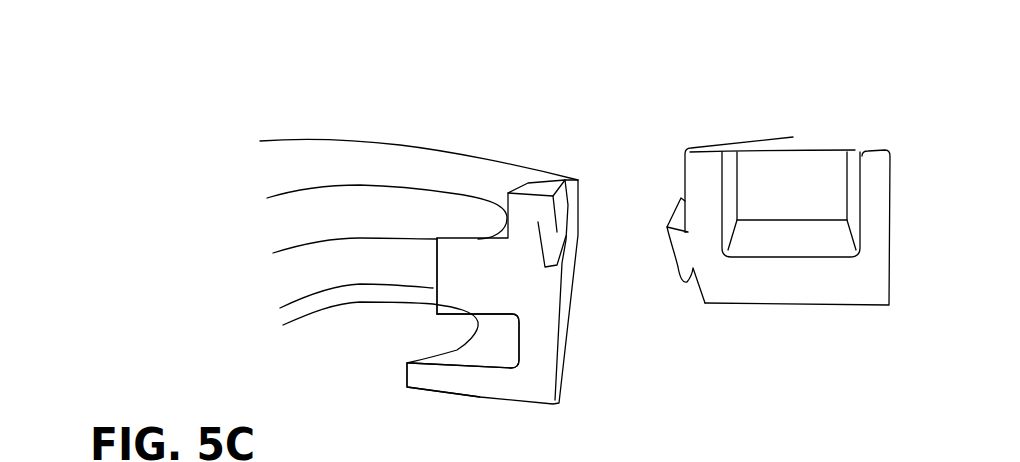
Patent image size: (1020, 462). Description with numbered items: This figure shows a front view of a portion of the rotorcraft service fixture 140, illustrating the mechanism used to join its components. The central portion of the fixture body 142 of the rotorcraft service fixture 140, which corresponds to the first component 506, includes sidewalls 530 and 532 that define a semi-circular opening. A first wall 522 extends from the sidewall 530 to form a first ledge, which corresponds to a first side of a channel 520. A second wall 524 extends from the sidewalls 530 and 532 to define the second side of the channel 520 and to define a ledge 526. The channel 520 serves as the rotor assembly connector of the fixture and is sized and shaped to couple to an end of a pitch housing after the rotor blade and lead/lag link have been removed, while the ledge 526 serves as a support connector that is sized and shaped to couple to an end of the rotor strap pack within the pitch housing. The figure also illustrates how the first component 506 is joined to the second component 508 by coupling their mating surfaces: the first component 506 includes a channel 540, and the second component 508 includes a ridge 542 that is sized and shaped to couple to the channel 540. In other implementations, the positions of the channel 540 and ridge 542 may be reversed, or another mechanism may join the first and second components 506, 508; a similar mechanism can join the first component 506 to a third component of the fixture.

The rotorcraft service fixture 140 is at (198, 105).
The fixture body 142 is at (398, 142).
The first component 506 is at (500, 113).
The second component 508 is at (794, 137).
The channel 520 is at (432, 335).
The first wall 522 is at (407, 365).
The second wall 524 is at (437, 280).
The ledge 526 is at (478, 235).
The sidewall 530 is at (518, 345).
The sidewall 532 is at (508, 195).
The channel 540 is at (580, 216).
The ridge 542 is at (678, 268).